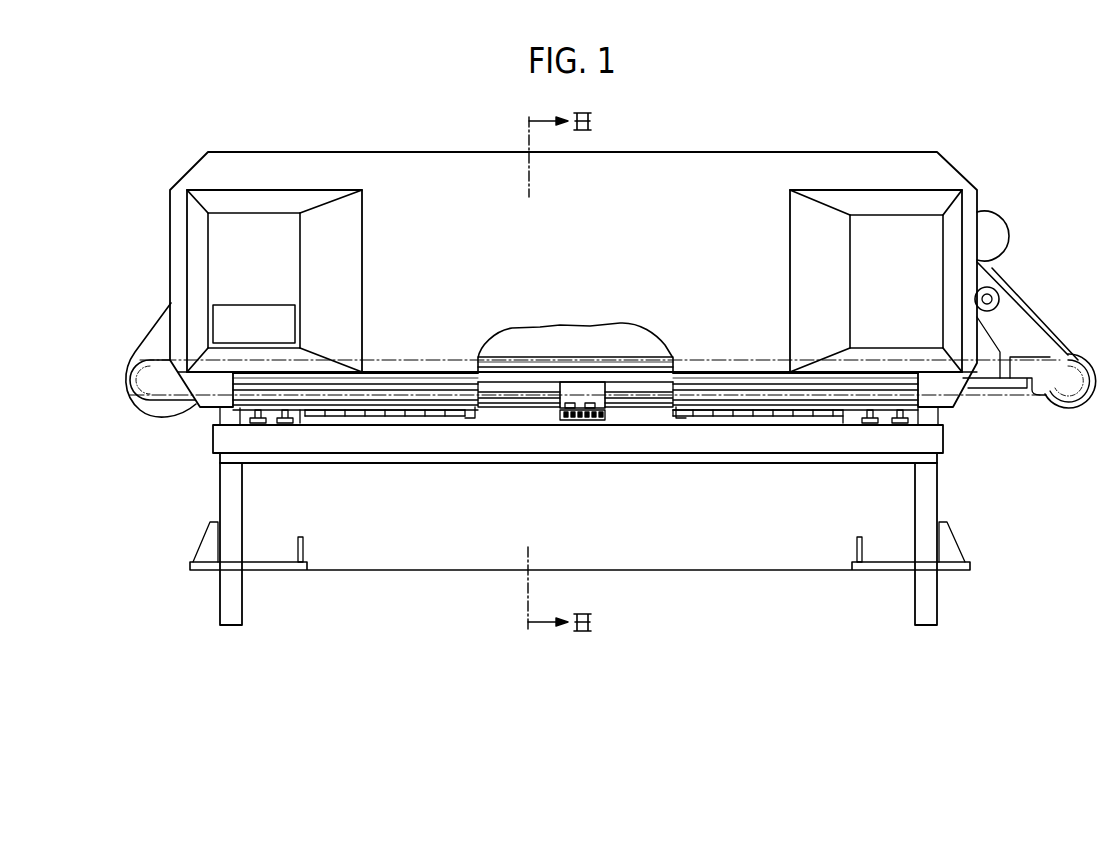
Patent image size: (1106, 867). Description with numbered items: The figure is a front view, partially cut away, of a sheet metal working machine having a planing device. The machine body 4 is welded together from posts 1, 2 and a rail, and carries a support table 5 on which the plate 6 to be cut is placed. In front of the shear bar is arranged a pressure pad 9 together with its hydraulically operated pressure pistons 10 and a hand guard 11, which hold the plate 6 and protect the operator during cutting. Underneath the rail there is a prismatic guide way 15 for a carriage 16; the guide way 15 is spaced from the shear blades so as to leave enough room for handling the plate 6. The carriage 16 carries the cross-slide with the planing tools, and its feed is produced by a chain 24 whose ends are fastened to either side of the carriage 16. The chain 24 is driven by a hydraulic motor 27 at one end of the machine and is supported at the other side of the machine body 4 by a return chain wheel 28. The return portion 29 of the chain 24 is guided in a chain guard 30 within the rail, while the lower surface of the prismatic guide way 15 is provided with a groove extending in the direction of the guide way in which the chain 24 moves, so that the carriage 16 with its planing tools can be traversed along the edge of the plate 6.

The post 1 is at (220, 613).
The post 2 is at (930, 615).
The machine body 4 is at (425, 596).
The support table 5 is at (617, 447).
The plate 6 is at (720, 428).
The pressure pad 9 is at (707, 178).
The pressure pistons 10 is at (285, 427).
The hand guard 11 is at (815, 403).
The prismatic guide way 15 is at (507, 377).
The carriage 16 is at (573, 388).
The chain 24 is at (520, 403).
The hydraulic motor 27 is at (126, 388).
The return chain wheel 28 is at (1062, 388).
The return portion 29 is at (643, 360).
The chain guard 30 is at (603, 360).